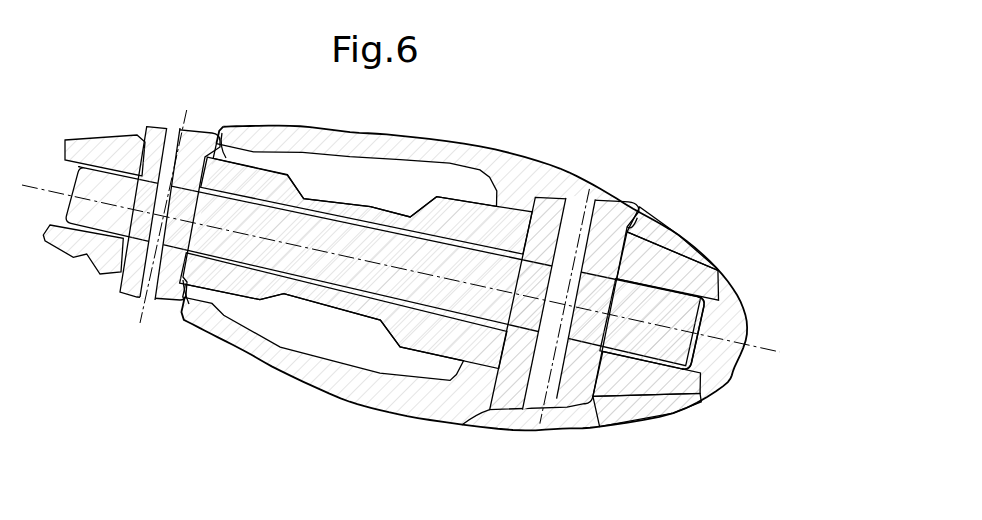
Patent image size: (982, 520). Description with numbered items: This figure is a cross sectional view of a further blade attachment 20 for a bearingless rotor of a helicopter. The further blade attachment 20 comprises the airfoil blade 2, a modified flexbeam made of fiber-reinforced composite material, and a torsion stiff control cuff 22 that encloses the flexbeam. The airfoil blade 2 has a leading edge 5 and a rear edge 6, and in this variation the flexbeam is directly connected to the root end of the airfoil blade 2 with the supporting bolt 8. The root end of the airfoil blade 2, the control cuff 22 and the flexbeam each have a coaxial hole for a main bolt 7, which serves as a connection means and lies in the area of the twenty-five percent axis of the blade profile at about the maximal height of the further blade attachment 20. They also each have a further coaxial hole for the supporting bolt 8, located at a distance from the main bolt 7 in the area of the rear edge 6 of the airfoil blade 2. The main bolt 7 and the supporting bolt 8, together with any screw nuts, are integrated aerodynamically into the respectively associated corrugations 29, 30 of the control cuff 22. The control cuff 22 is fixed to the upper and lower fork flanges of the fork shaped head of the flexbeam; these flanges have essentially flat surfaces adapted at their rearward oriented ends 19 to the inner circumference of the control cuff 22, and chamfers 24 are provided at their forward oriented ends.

The airfoil blade 2 is at (692, 315).
The leading edge 5 is at (707, 350).
The rear edge 6 is at (72, 170).
The main bolt 7 is at (552, 205).
The supporting bolt 8 is at (162, 140).
The rearward oriented ends 19 is at (98, 150).
The further blade attachment 20 is at (736, 148).
The control cuff 22 is at (512, 170).
The chamfers 24 is at (716, 270).
The corrugation 29 is at (220, 146).
The corrugation 30 is at (638, 210).